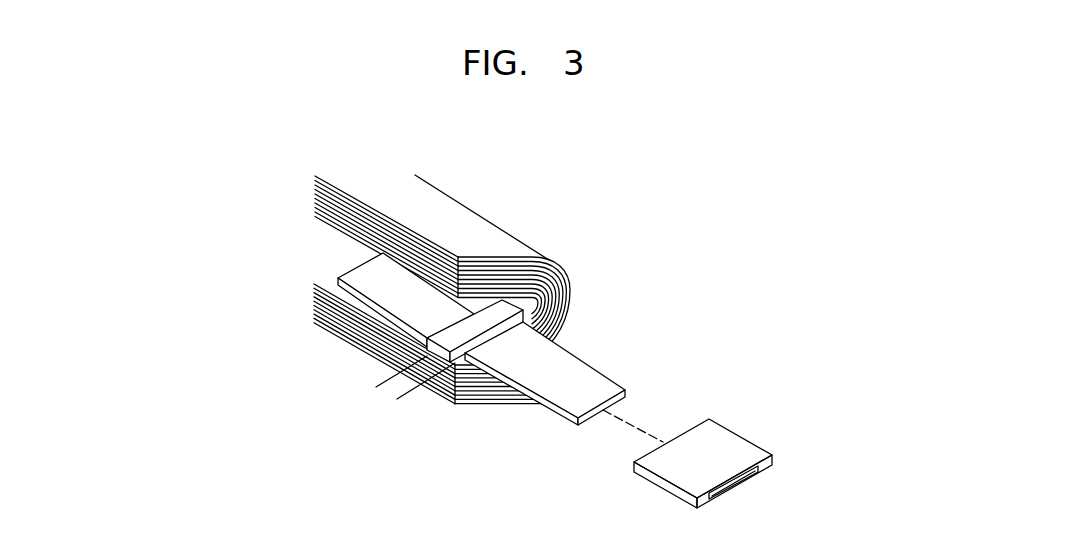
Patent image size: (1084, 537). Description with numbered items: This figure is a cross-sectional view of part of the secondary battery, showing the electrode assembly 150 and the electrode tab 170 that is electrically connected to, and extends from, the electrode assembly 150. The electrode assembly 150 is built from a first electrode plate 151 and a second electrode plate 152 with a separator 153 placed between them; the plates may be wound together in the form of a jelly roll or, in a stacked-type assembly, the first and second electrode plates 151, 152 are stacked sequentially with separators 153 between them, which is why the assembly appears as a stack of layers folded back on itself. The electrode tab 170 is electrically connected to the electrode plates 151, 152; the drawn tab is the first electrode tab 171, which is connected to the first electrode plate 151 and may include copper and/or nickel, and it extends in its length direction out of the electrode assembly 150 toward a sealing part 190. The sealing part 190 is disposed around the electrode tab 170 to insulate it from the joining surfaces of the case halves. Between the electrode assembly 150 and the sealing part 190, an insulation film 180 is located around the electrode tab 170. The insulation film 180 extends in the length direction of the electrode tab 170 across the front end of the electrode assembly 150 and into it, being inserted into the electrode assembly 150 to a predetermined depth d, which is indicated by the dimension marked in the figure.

The electrode assembly 150 is at (486, 268).
The first electrode plate 151 is at (566, 267).
The second electrode plate 152 is at (560, 292).
The separator 153 is at (568, 277).
The electrode tab 170 is at (505, 341).
The first electrode tab 171 is at (505, 310).
The insulation film 180 is at (503, 310).
The sealing part 190 is at (737, 443).
The depth d is at (425, 412).